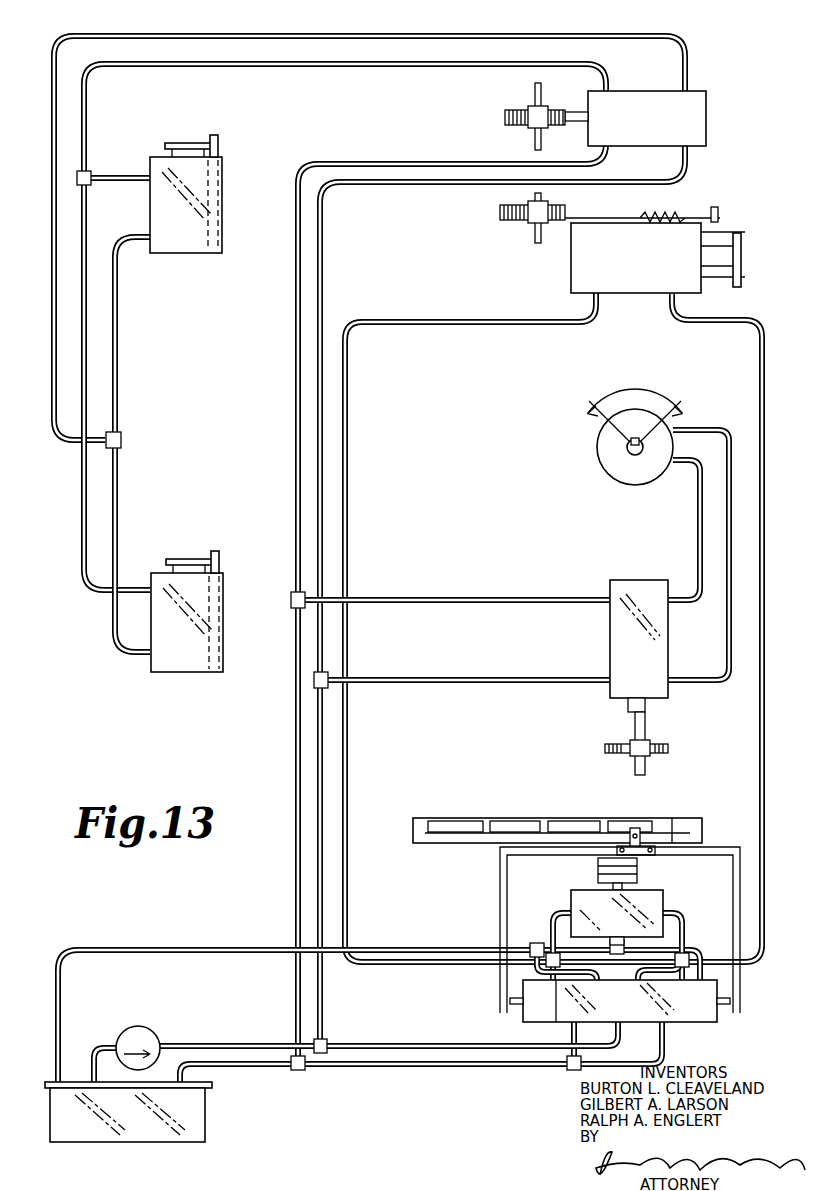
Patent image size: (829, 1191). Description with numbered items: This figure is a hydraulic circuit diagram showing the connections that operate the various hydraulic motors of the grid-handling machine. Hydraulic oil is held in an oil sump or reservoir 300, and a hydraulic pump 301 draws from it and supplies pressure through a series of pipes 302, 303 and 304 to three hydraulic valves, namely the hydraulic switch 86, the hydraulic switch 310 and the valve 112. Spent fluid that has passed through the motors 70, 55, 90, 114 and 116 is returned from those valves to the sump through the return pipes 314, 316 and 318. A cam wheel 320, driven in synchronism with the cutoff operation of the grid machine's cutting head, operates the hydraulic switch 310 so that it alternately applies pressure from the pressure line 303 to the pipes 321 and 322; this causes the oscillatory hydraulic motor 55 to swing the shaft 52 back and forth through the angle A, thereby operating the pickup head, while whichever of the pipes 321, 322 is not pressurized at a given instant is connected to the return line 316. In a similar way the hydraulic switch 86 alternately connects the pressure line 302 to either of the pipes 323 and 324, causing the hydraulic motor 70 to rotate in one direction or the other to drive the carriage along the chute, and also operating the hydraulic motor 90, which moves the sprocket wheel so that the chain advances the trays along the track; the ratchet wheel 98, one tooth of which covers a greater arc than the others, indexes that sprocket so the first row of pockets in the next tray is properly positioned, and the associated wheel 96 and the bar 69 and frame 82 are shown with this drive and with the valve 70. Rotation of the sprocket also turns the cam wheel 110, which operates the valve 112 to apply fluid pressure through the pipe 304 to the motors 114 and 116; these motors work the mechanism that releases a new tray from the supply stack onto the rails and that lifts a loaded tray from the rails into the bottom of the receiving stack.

The shaft 52 is at (637, 455).
The oscillatory hydraulic motor 55 is at (607, 460).
The rack 69 is at (452, 820).
The hydraulic motor 70 is at (652, 898).
The frame 82 is at (708, 850).
The hydraulic switch 86 is at (632, 1015).
The hydraulic motor 90 is at (585, 274).
The gear 96 is at (560, 219).
The ratchet wheel 98 is at (520, 213).
The cam wheel 110 is at (505, 118).
The valve 112 is at (697, 110).
The motor 114 is at (185, 248).
The motor 116 is at (180, 667).
The oil sump or reservoir 300 is at (198, 1112).
The hydraulic pump 301 is at (143, 1027).
The pipe 302 is at (458, 1045).
The pipe 303 is at (500, 678).
The pipe 304 is at (415, 183).
The hydraulic switch 310 is at (610, 636).
The pipe 314 is at (450, 1067).
The pipe 316 is at (500, 598).
The pipe 318 is at (400, 165).
The cam wheel 320 is at (632, 745).
The pipe 321 is at (705, 684).
The pipe 322 is at (703, 598).
The pipe 323 is at (570, 958).
The pipe 324 is at (640, 974).